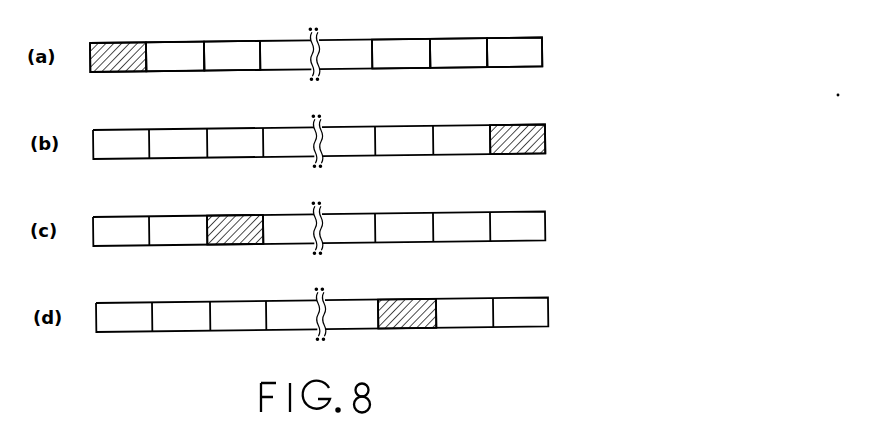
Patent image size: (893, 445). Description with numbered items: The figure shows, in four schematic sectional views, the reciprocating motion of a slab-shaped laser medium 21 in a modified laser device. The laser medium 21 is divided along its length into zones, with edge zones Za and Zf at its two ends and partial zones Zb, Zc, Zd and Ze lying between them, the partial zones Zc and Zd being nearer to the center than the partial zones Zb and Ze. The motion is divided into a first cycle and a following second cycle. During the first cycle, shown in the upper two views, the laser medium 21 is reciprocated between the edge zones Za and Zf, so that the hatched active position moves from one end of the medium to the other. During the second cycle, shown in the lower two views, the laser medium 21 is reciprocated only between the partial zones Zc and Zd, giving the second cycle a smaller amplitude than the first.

The slab-shaped laser medium 21 is at (541, 37).
The edge zone Za is at (118, 43).
The partial zone Zb is at (175, 43).
The partial zone Zc is at (232, 43).
The partial zone Zd is at (401, 42).
The partial zone Ze is at (458, 41).
The edge zone Zf is at (514, 41).